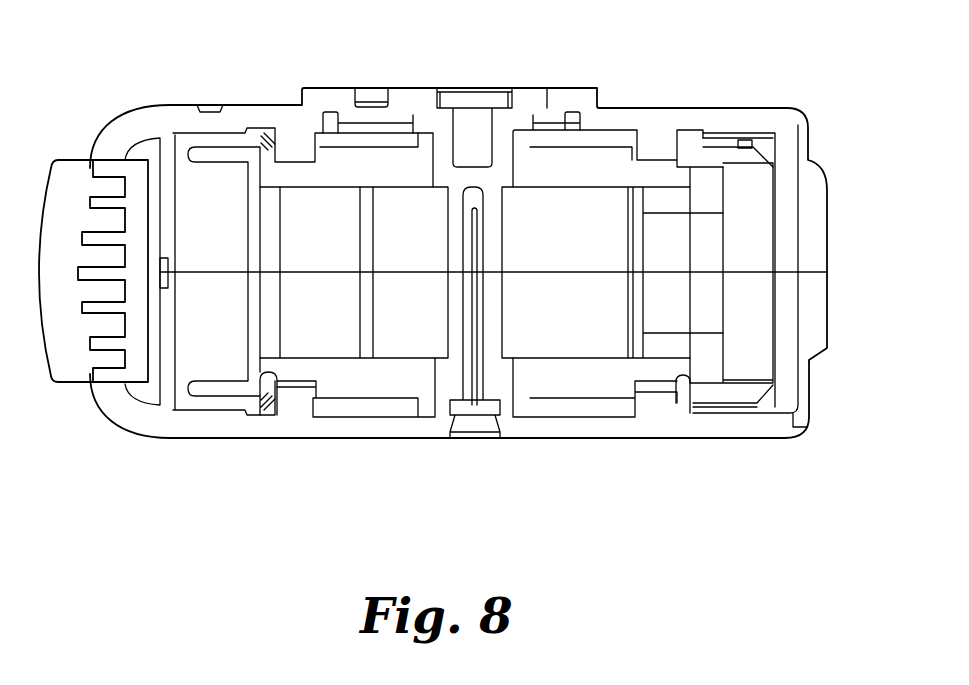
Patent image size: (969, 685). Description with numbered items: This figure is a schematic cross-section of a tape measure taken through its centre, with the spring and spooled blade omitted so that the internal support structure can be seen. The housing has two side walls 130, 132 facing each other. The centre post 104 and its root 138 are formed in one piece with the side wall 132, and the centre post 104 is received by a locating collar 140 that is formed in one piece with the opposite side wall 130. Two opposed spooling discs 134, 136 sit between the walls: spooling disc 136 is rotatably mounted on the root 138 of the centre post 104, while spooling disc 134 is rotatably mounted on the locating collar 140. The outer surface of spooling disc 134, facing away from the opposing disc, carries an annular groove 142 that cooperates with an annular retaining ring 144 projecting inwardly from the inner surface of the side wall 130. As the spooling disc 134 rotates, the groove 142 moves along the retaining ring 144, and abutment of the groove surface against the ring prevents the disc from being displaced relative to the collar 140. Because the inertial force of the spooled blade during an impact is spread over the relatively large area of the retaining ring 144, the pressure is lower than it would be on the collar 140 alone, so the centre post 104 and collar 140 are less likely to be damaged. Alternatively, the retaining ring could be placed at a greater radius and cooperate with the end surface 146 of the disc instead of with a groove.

The centre post 104 is at (447, 323).
The side wall 130 is at (733, 428).
The side wall 132 is at (727, 122).
The spooling disc 134 is at (560, 387).
The spooling disc 136 is at (555, 158).
The root 138 is at (445, 152).
The locating collar 140 is at (442, 387).
The annular groove 142 is at (255, 386).
The annular retaining ring 144 is at (297, 395).
The end surface 146 is at (180, 387).